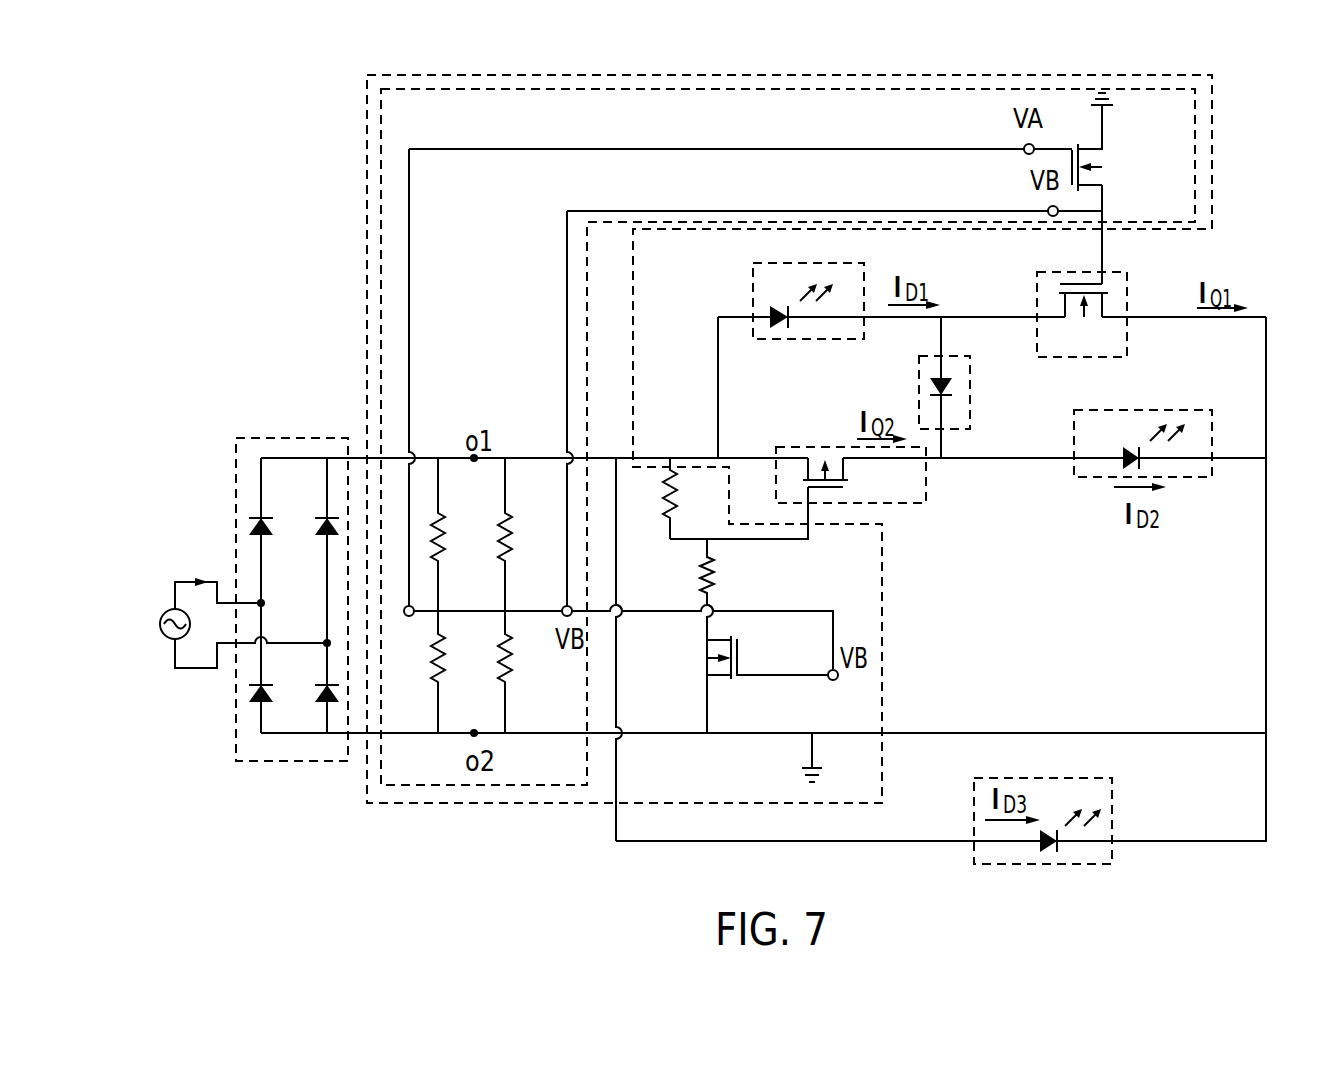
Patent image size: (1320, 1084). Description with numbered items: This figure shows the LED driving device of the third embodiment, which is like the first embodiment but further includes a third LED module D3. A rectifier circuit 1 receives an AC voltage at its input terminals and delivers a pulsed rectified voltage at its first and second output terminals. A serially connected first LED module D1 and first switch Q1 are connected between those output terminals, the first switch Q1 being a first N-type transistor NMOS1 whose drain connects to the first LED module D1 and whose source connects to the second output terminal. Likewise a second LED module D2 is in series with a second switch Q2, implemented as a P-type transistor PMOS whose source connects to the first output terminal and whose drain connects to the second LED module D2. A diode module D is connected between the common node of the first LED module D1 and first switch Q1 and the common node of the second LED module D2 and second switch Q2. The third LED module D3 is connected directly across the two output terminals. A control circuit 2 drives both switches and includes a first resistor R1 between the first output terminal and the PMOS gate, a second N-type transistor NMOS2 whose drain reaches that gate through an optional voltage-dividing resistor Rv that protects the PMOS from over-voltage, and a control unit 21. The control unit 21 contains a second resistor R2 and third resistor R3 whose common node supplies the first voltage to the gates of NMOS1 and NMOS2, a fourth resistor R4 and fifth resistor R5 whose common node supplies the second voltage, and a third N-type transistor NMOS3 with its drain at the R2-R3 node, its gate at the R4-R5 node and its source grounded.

The rectifier circuit 1 is at (308, 437).
The control circuit 2 is at (1214, 146).
The control unit 21 is at (467, 790).
The first resistor R1 is at (686, 498).
The second resistor R2 is at (524, 534).
The third resistor R3 is at (522, 672).
The fourth resistor R4 is at (457, 534).
The fifth resistor R5 is at (456, 672).
The voltage-dividing resistor Rv is at (724, 589).
The diode module D is at (971, 392).
The first LED module D1 is at (750, 298).
The second LED module D2 is at (1188, 408).
The third LED module D3 is at (1113, 797).
The first switch Q1 is at (1112, 299).
The second switch Q2 is at (852, 508).
The first N-type metal oxide semiconductor field effect transistor NMOS1 is at (1082, 319).
The second N-type metal oxide semiconductor field effect transistor NMOS2 is at (767, 709).
The third N-type metal oxide semiconductor field effect transistor NMOS3 is at (1126, 142).
The P-type metal oxide semiconductor field effect transistor PMOS is at (860, 475).